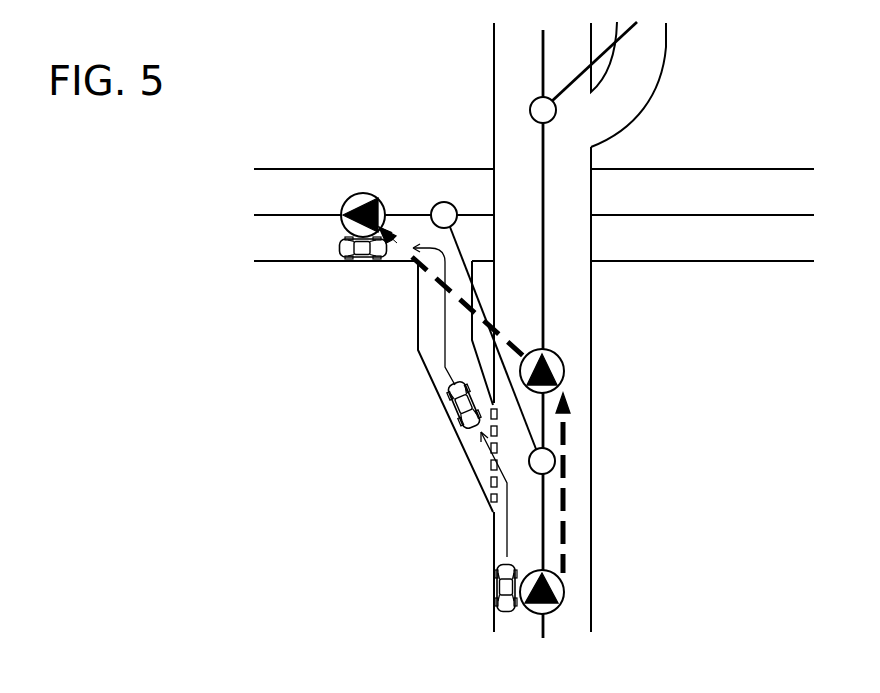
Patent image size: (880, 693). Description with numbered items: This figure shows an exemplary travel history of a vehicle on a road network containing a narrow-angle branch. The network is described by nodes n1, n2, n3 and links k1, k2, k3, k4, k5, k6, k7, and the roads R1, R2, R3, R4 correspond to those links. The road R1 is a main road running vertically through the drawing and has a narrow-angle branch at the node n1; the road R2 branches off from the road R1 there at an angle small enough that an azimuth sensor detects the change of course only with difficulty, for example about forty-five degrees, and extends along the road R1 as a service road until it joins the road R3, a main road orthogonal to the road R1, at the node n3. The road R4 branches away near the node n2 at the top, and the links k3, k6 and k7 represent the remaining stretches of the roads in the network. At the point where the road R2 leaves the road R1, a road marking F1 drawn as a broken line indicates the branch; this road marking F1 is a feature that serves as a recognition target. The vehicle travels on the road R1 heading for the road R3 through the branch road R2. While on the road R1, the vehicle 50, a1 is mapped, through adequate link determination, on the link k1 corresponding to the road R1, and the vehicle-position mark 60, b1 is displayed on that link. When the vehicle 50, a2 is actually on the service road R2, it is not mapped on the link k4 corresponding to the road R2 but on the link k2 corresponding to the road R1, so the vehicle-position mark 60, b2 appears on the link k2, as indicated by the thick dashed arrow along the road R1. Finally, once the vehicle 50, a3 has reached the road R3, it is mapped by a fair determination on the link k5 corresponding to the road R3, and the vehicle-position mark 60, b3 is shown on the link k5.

The link k1 is at (545, 615).
The link k2 is at (546, 279).
The link k3 is at (542, 57).
The link k4 is at (460, 247).
The link k5 is at (272, 215).
The link k6 is at (758, 217).
The link k7 is at (627, 33).
The node n1 is at (553, 463).
The node n2 is at (530, 110).
The node n3 is at (440, 203).
The road R1 is at (572, 343).
The road R2 is at (428, 355).
The road R3 is at (288, 190).
The road R4 is at (653, 95).
The vehicle-position mark 60, b1 is at (563, 592).
The vehicle-position mark 60, b2 is at (563, 373).
The vehicle-position mark 60, b3 is at (357, 193).
The vehicle 50, a1 is at (497, 577).
The vehicle 50, a2 is at (455, 425).
The vehicle 50, a3 is at (363, 257).
The road marking F1 is at (490, 463).